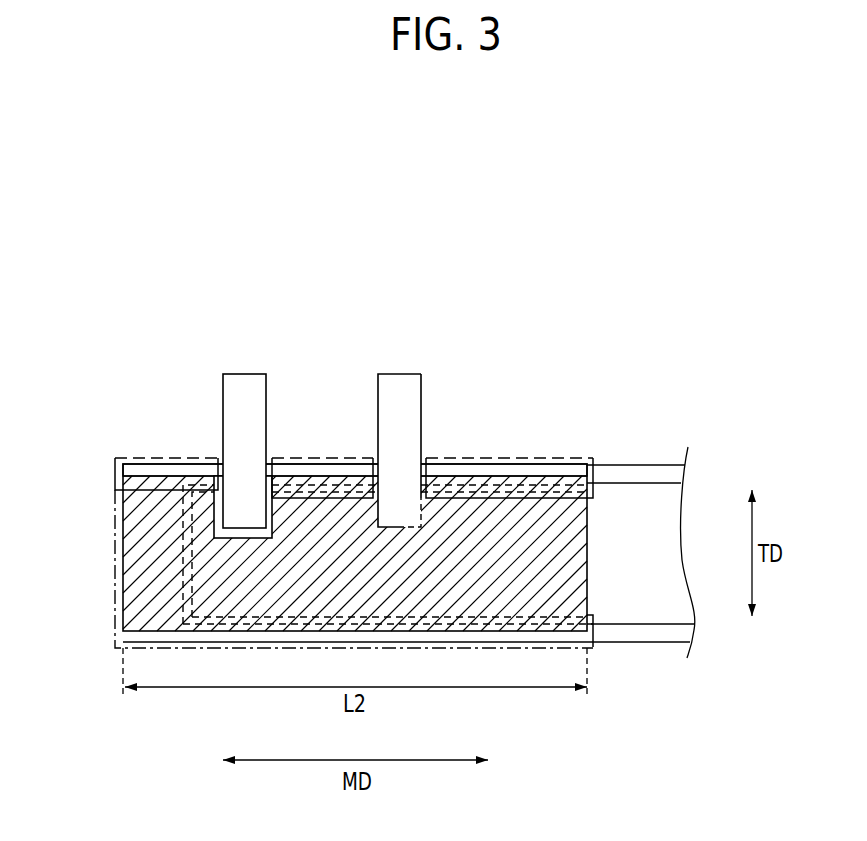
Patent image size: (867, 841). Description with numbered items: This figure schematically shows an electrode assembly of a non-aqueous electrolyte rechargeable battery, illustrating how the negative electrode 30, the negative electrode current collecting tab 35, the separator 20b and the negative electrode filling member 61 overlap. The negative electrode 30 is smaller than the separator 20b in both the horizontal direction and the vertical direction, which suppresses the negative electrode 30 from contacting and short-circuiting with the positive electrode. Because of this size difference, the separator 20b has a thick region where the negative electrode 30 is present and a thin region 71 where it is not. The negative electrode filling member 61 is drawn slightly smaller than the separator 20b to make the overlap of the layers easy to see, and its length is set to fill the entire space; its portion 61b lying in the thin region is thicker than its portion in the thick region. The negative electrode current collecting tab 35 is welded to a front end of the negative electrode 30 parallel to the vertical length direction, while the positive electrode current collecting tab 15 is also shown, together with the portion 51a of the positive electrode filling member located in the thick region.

The positive electrode current collecting tab 15 is at (421, 390).
The negative electrode current collecting tab 35 is at (223, 389).
The thin region 71 is at (147, 456).
The portion of the negative electrode filling member in the thin region 61b is at (307, 476).
The separator 20b is at (567, 464).
The negative electrode 30 is at (657, 483).
The negative electrode filling member 61 is at (587, 562).
The portion of the positive electrode filling member in the thick region 51a is at (398, 530).